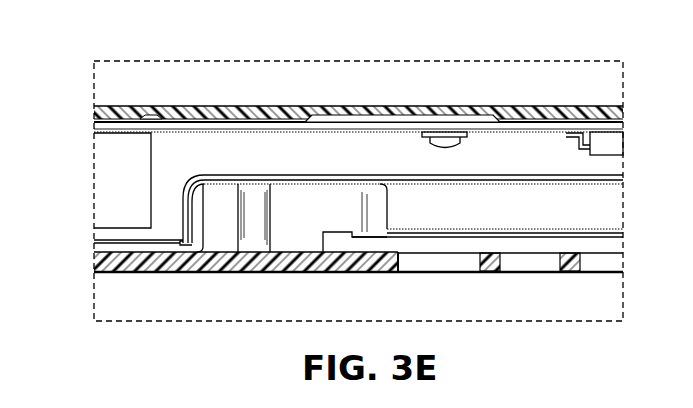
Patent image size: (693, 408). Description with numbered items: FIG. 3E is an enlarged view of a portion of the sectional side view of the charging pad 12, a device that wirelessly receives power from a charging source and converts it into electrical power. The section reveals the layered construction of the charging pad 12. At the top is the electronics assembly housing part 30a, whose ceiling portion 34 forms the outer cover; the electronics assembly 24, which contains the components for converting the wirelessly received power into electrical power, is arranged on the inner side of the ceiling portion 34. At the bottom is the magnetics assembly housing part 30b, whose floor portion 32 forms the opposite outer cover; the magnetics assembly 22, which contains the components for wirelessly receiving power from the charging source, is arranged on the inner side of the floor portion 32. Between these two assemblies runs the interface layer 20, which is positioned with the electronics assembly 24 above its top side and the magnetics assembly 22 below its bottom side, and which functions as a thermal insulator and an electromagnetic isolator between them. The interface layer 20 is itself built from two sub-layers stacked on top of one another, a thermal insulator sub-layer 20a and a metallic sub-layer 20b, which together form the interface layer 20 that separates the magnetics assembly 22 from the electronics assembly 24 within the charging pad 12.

The charging pad 12 is at (538, 82).
The interface layer 20 is at (401, 190).
The thermal insulator sub-layer 20a is at (194, 208).
The metallic sub-layer 20b is at (305, 176).
The magnetics assembly 22 is at (430, 208).
The electronics assembly 24 is at (207, 128).
The electronics assembly housing part 30a is at (392, 104).
The magnetics assembly housing part 30b is at (492, 276).
The floor portion 32 is at (466, 272).
The ceiling portion 34 is at (360, 106).